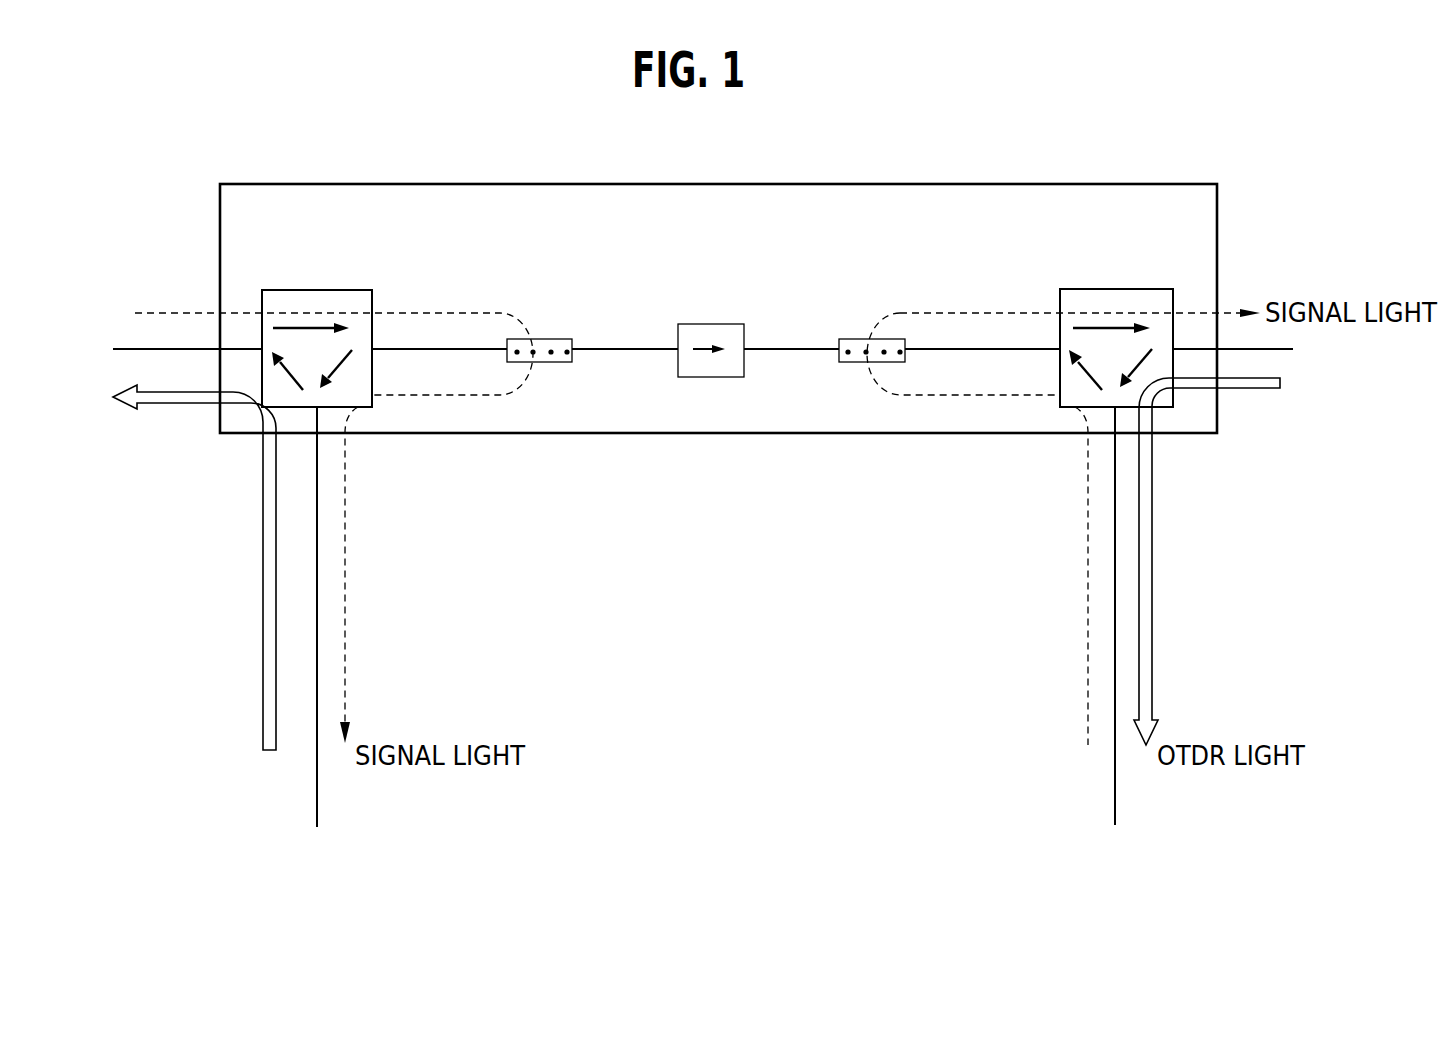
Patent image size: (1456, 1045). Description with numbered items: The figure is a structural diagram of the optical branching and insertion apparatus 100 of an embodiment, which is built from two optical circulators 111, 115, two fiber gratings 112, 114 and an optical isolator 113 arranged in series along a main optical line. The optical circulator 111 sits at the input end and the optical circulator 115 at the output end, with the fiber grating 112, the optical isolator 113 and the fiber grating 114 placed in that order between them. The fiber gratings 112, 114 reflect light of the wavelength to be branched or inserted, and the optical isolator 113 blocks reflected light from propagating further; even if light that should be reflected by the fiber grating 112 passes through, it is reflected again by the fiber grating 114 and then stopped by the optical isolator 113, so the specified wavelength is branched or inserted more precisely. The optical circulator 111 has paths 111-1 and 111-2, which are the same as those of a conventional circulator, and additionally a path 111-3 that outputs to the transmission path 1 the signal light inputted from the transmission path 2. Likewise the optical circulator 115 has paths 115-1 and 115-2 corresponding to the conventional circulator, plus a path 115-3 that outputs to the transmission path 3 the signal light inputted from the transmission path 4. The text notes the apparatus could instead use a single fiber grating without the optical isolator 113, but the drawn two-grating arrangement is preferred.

The optical branching and insertion apparatus 100 is at (1218, 397).
The transmission path 1 is at (172, 348).
The transmission path 2 is at (318, 618).
The transmission path 3 is at (1116, 618).
The transmission path 4 is at (1277, 350).
The optical circulator 111 is at (325, 340).
The path 111-1 is at (305, 328).
The path 111-2 is at (292, 382).
The path 111-3 is at (343, 365).
The fiber grating 112 is at (533, 338).
The optical isolator 113 is at (712, 324).
The fiber grating 114 is at (857, 338).
The optical circulator 115 is at (1086, 336).
The path 115-1 is at (1090, 378).
The path 115-2 is at (1085, 330).
The path 115-3 is at (1130, 370).